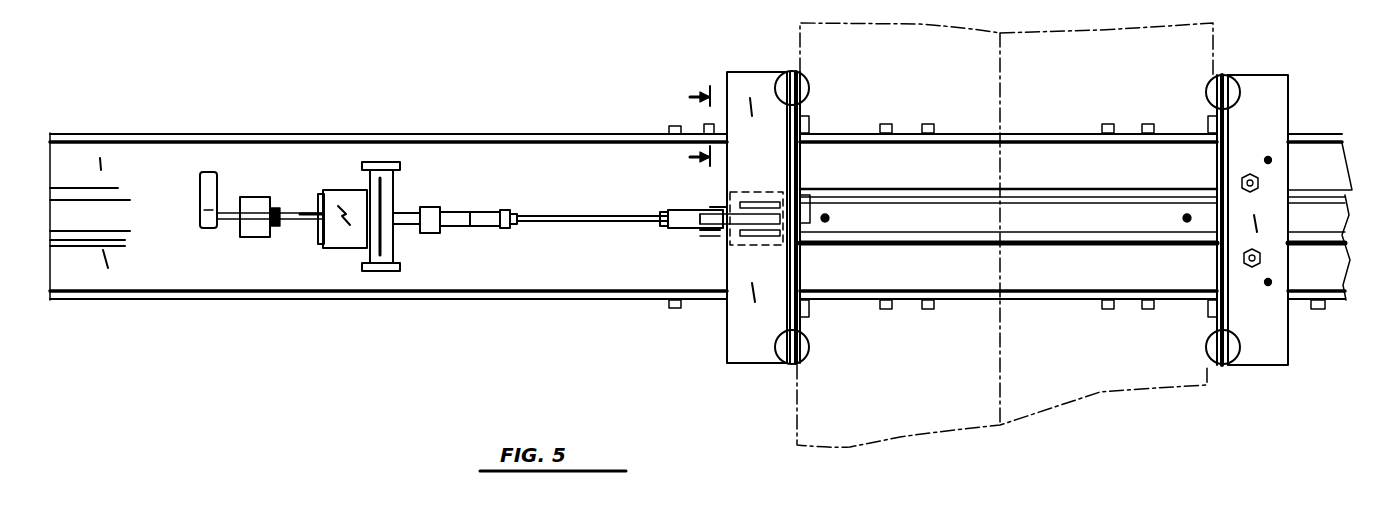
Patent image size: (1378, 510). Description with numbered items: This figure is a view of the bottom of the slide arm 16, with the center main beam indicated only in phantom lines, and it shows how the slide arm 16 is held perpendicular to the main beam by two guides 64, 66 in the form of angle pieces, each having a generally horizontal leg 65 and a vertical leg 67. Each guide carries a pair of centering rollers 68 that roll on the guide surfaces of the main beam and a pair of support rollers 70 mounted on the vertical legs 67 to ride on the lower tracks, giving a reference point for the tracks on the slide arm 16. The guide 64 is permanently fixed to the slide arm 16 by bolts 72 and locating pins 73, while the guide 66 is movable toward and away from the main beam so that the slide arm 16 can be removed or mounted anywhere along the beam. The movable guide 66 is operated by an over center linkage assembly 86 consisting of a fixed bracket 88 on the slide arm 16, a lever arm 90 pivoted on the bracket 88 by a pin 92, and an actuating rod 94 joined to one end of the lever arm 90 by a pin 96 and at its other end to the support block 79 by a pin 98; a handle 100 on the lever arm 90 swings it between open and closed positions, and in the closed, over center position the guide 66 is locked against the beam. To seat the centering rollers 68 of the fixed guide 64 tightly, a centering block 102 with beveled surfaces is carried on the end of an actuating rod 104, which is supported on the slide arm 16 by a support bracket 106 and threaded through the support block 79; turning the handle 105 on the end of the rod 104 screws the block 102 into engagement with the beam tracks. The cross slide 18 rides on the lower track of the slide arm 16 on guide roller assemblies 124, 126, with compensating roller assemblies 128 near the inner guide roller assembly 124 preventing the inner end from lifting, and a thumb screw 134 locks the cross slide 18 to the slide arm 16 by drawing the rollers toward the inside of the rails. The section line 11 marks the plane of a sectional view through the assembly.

The section line 11- 11 is at (683, 124).
The slide arm 16 is at (110, 282).
The cross slide 18 is at (95, 133).
The guide 64 is at (1282, 66).
The horizontal leg 65 is at (722, 345).
The movable guide 66 is at (782, 62).
The vertical leg 67 is at (800, 276).
The centering rollers 68 is at (802, 85).
The support rollers 70 is at (806, 116).
The bolts 72 is at (1258, 181).
The locating pins 73 is at (1268, 160).
The support block 79 is at (760, 230).
The over center linkage assembly 86 is at (527, 230).
The fixed bracket 88 is at (357, 250).
The lever arm 90 is at (417, 228).
The pin 92 is at (380, 272).
The actuating rod 94 is at (565, 224).
The pin 96 is at (432, 207).
The pin 98 is at (752, 198).
The handle 100 is at (335, 248).
The centering block 102 is at (808, 205).
The actuating rod 104 is at (275, 226).
The handle 105 is at (196, 172).
The support bracket 106 is at (262, 197).
The inner guide roller assembly 124 is at (930, 124).
The guide roller assembly 126 is at (672, 310).
The compensating roller assemblies 128 is at (888, 124).
The thumb screws 134 is at (704, 128).